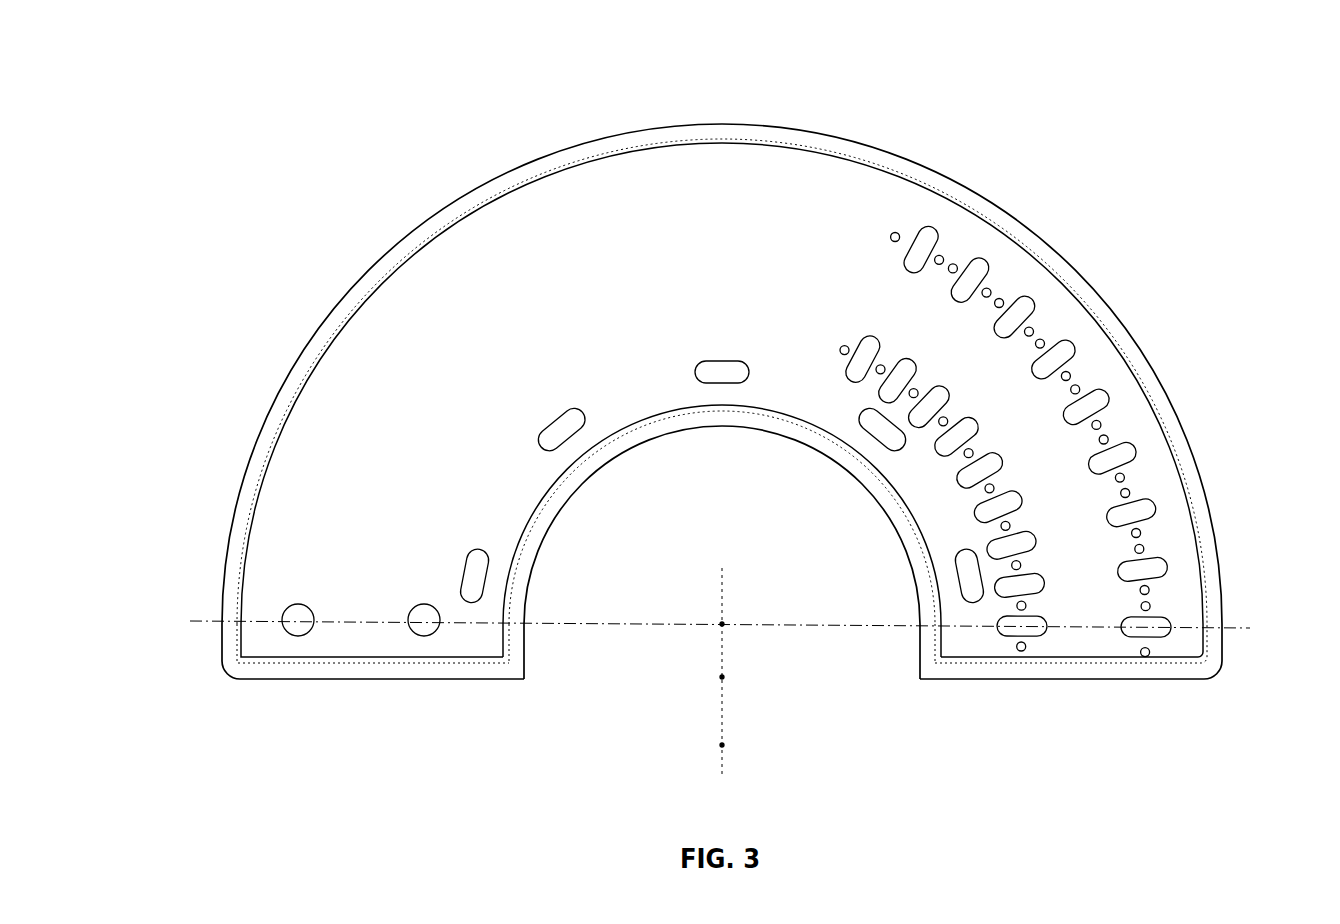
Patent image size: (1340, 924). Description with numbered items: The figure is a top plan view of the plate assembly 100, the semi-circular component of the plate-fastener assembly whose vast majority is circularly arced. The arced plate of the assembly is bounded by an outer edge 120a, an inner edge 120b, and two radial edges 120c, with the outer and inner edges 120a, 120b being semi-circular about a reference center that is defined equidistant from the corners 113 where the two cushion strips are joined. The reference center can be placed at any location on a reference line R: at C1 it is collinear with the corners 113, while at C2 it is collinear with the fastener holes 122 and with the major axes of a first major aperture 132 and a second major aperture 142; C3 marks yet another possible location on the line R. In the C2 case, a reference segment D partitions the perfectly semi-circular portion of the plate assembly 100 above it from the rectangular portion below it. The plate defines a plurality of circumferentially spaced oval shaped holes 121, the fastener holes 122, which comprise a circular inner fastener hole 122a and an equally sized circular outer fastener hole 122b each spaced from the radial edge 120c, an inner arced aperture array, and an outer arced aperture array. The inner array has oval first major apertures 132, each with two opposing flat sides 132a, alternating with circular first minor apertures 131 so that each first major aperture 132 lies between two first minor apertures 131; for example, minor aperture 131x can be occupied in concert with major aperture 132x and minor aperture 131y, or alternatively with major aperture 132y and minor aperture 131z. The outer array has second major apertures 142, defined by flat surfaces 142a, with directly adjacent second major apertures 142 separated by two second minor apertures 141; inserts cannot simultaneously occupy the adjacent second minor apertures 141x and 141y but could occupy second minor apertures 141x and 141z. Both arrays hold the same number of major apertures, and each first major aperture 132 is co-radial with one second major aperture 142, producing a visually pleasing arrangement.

The plate assembly 100 is at (722, 413).
The corners 113 is at (506, 681).
The outer edge 120a is at (613, 140).
The inner edge 120b is at (583, 470).
The radial edges 120c is at (340, 667).
The oval shaped holes 121 is at (722, 357).
The fastener holes 122 is at (300, 659).
The inner fastener hole 122a is at (440, 623).
The outer fastener hole 122b is at (282, 616).
The first minor apertures 131 is at (961, 556).
The first minor aperture 131x is at (1010, 526).
The first minor aperture 131y is at (1021, 565).
The first minor aperture 131z is at (986, 487).
The first major apertures 132 is at (949, 541).
The first major aperture 132x is at (986, 556).
The first major aperture 132y is at (974, 514).
The flat sides 132a is at (955, 422).
The second minor apertures 141 is at (1100, 445).
The second minor aperture 141x is at (1124, 477).
The second minor aperture 141y is at (1130, 495).
The second minor aperture 141z is at (1108, 439).
The second major apertures 142 is at (1100, 430).
The flat surfaces 142a is at (1001, 298).
The reference line R is at (732, 580).
The reference segment D is at (640, 625).
The reference center C1 is at (724, 678).
The reference center C2 is at (724, 625).
The reference center C3 is at (724, 746).